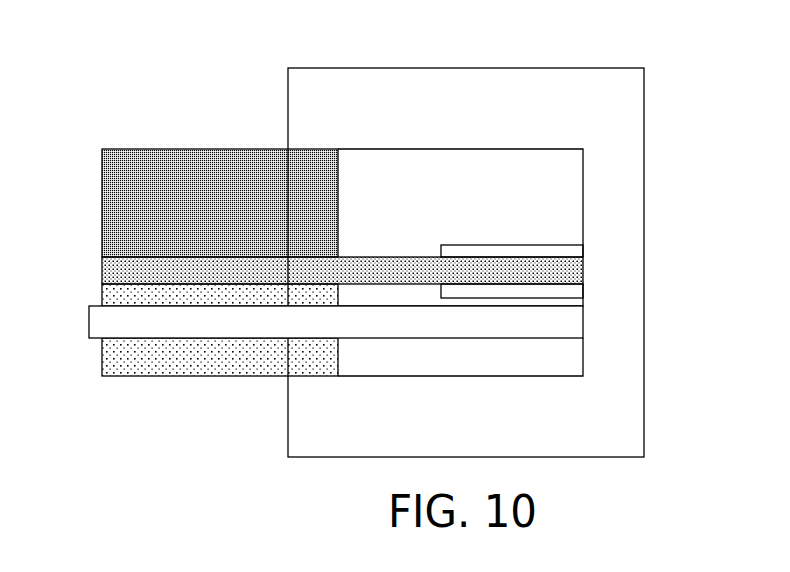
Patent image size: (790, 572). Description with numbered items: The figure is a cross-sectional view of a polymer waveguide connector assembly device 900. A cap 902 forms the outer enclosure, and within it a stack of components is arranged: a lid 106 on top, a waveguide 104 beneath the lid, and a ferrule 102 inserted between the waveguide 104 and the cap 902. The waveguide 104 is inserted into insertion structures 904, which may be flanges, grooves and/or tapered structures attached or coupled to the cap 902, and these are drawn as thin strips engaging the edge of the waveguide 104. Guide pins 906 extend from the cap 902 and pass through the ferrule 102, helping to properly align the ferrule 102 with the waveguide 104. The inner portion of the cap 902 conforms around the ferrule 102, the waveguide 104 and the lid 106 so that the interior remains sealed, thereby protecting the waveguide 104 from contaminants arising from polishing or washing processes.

The polymer waveguide connector assembly device 900 is at (712, 32).
The cap 902 is at (627, 117).
The lid 106 is at (211, 149).
The waveguide 104 is at (102, 272).
The ferrule 102 is at (200, 376).
The insertion structures 904 is at (577, 292).
The guide pins 906 is at (558, 328).